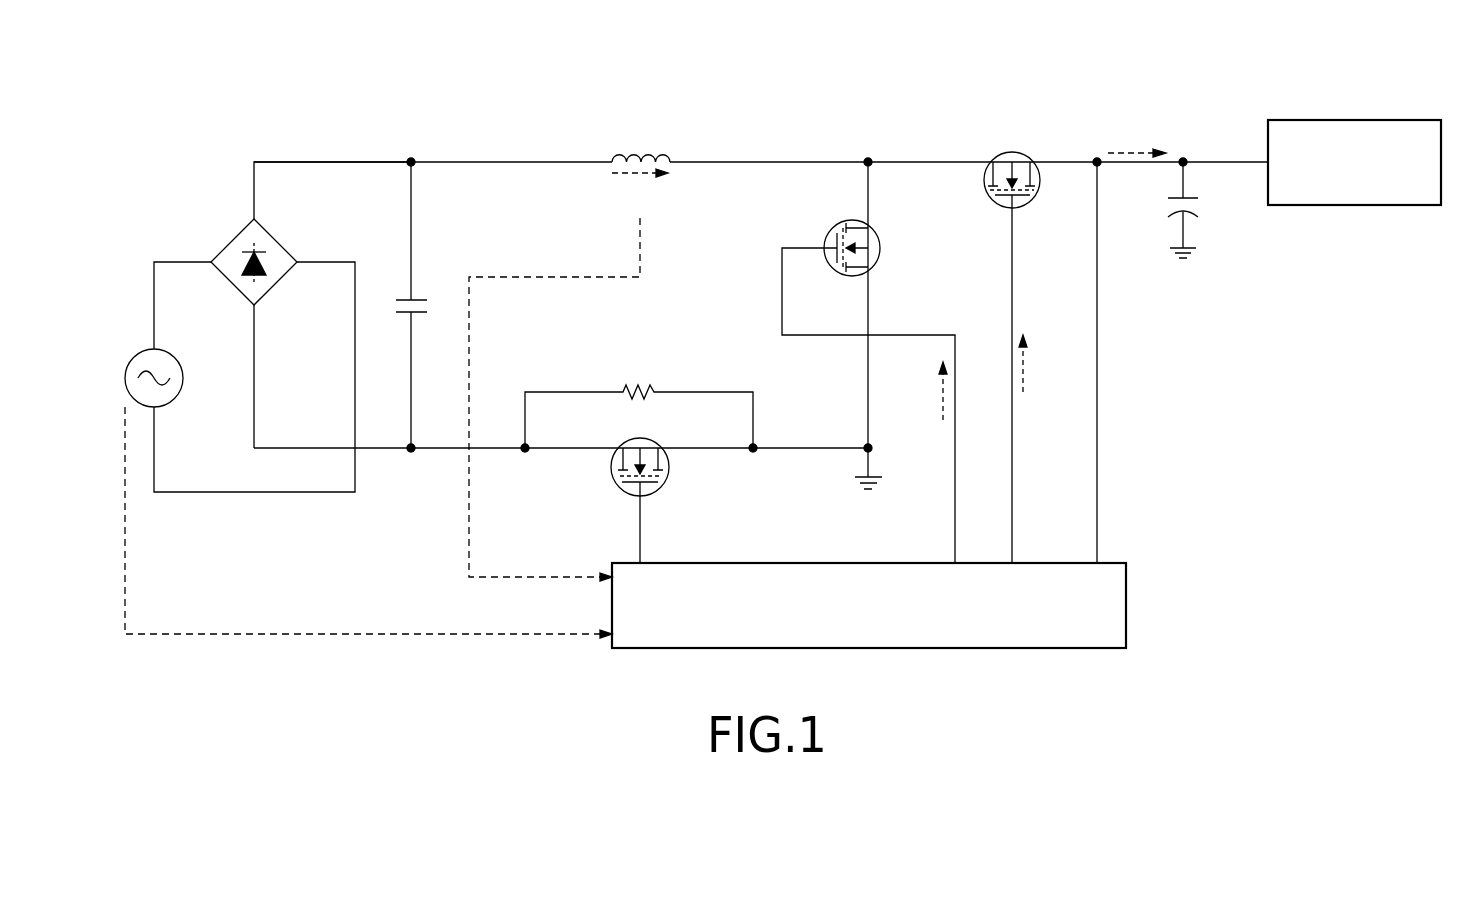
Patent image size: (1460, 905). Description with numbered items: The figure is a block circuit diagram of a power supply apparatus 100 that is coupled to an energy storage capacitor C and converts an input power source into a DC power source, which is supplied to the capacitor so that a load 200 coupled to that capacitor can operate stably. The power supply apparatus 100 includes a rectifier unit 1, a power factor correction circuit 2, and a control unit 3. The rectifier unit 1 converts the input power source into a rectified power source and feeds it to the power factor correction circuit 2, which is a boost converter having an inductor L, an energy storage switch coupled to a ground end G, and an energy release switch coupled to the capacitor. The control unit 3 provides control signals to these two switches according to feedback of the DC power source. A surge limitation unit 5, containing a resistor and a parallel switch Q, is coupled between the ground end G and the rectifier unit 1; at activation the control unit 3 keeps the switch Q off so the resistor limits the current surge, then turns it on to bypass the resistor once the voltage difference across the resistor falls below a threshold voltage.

The power supply apparatus 100 is at (790, 47).
The rectifier unit 1 is at (236, 241).
The power factor correction circuit 2 is at (914, 147).
The control unit 3 is at (868, 564).
The surge limitation unit 5 is at (574, 475).
The load 200 is at (1353, 127).